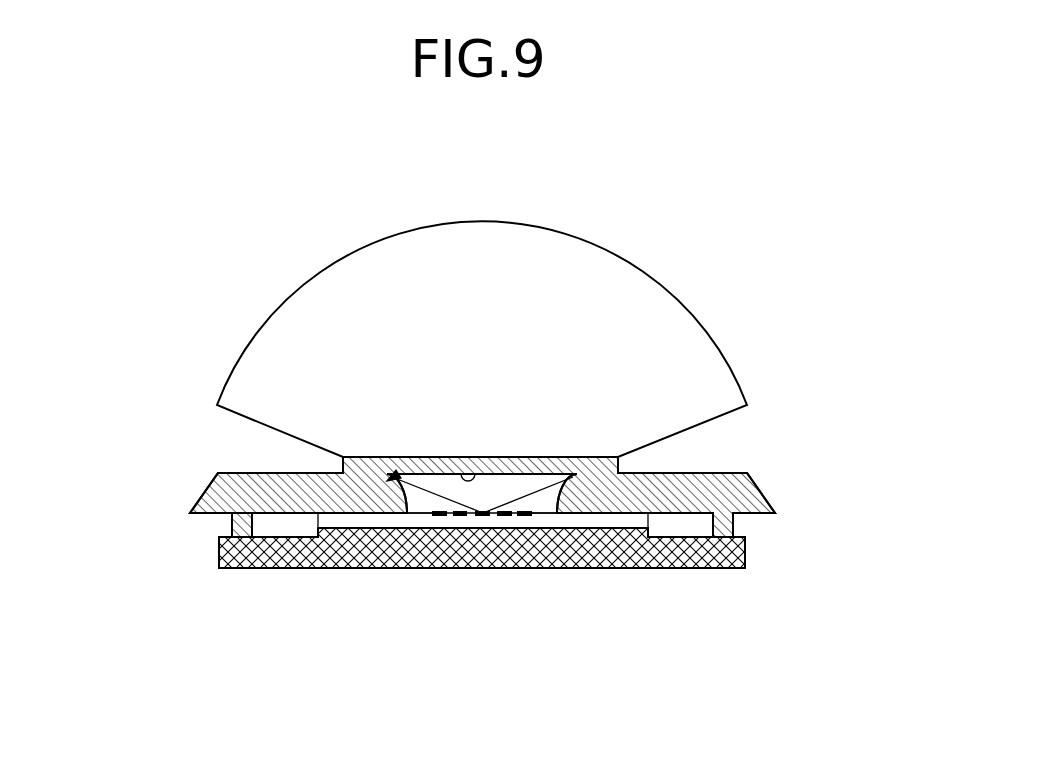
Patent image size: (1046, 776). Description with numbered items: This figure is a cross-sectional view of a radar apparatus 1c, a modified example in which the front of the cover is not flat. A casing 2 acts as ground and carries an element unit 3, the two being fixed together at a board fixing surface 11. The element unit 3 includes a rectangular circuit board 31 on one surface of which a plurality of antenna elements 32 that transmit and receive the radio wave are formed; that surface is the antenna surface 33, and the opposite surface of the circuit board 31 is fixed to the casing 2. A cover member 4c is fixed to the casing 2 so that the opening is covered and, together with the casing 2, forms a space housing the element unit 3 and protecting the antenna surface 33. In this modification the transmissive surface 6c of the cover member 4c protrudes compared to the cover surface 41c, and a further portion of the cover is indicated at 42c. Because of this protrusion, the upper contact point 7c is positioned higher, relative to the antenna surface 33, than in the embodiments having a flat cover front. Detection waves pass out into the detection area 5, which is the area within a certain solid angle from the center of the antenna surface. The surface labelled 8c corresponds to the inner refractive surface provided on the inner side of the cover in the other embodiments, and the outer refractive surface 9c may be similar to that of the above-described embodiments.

The radar apparatus 1c is at (256, 168).
The casing 2 is at (730, 555).
The element unit 3 is at (612, 522).
The circuit board 31 is at (403, 517).
The antenna elements 32 is at (477, 515).
The antenna surface 33 is at (549, 507).
The cover member 4c is at (757, 488).
The cover surface 41c is at (720, 473).
The frame inner portion 42c is at (470, 457).
The detection area 5 is at (472, 223).
The transmissive surface 6c is at (480, 457).
The upper contact point 7c is at (593, 457).
The wire 8c is at (395, 475).
The outer refractive surface 9c is at (208, 483).
The board fixing surface 11 is at (322, 527).